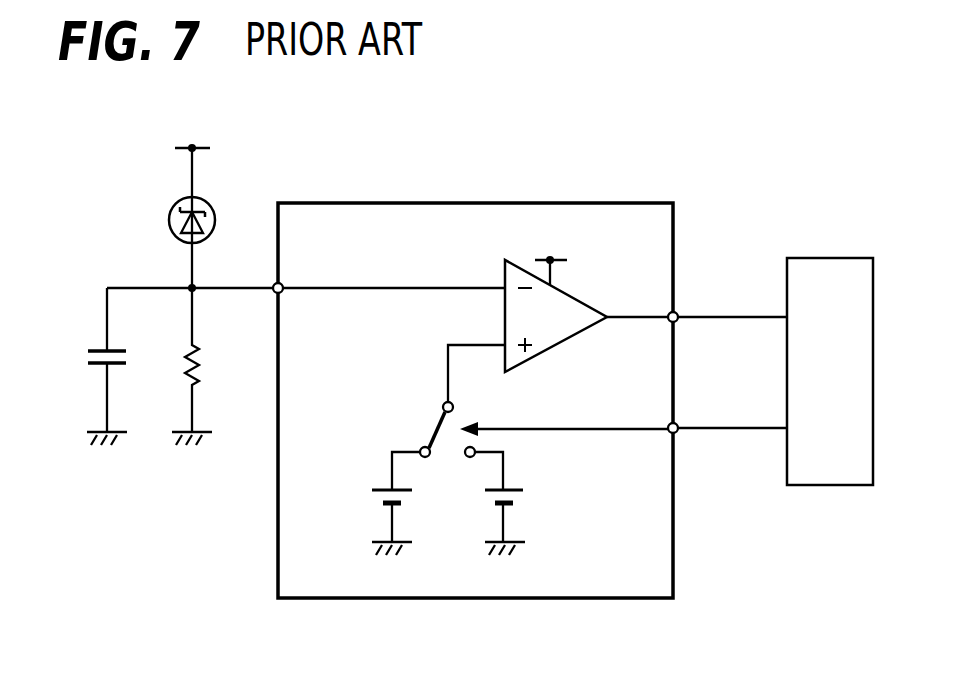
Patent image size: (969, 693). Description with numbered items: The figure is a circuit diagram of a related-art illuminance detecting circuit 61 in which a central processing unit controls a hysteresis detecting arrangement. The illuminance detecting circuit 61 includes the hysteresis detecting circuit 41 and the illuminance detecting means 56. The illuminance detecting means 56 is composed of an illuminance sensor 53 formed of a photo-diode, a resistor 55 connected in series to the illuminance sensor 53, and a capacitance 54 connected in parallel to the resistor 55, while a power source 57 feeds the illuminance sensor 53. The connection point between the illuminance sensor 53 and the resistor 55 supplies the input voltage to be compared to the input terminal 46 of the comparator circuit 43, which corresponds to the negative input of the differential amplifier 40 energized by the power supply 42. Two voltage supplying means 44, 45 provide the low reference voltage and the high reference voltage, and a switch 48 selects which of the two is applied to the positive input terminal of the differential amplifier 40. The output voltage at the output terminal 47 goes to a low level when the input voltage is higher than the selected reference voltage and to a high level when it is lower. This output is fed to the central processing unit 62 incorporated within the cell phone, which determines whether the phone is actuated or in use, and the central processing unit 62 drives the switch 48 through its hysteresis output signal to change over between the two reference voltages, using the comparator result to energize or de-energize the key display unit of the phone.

The differential amplifier 40 is at (564, 333).
The hysteresis detecting circuit 41 is at (421, 202).
The power supply 42 is at (555, 262).
The comparator circuit 43 is at (585, 286).
The voltage supplying means 44 is at (414, 494).
The voltage supplying means 45 is at (525, 494).
The input terminal 46 is at (281, 285).
The output terminal 47 is at (677, 313).
The switch 48 is at (425, 424).
The illuminance sensor 53 is at (169, 219).
The capacitance 54 is at (85, 361).
The resistor 55 is at (204, 368).
The illuminance detecting means 56 is at (107, 263).
The power source 57 is at (201, 147).
The illuminance detecting circuit 61 is at (342, 147).
The central processing unit 62 is at (834, 487).